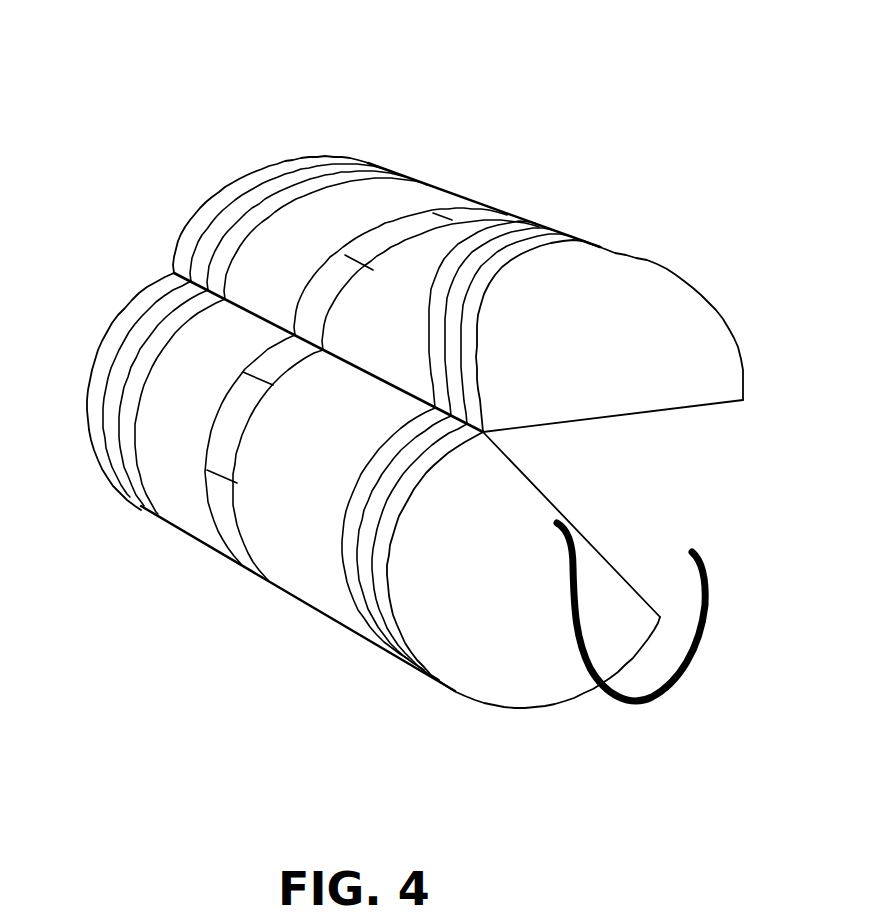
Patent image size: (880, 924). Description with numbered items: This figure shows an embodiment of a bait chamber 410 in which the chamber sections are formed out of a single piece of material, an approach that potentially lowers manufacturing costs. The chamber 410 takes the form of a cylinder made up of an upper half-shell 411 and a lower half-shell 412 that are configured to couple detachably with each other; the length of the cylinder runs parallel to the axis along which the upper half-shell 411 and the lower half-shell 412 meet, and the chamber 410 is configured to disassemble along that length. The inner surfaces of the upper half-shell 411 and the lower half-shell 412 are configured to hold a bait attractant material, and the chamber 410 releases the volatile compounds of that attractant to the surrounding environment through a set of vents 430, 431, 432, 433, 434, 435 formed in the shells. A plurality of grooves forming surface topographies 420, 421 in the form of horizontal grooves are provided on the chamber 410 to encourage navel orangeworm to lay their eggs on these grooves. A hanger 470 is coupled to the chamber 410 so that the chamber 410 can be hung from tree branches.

The chamber 410 is at (494, 446).
The upper half-shell 411 is at (608, 357).
The lower half-shell 412 is at (495, 573).
The surface topography (groove) 420 is at (525, 263).
The surface topography (groove) 421 is at (127, 353).
The vent 430 is at (240, 547).
The vent 431 is at (227, 433).
The vent 432 is at (283, 352).
The vent 433 is at (325, 296).
The vent 434 is at (385, 238).
The vent 435 is at (476, 220).
The hanger 470 is at (697, 655).